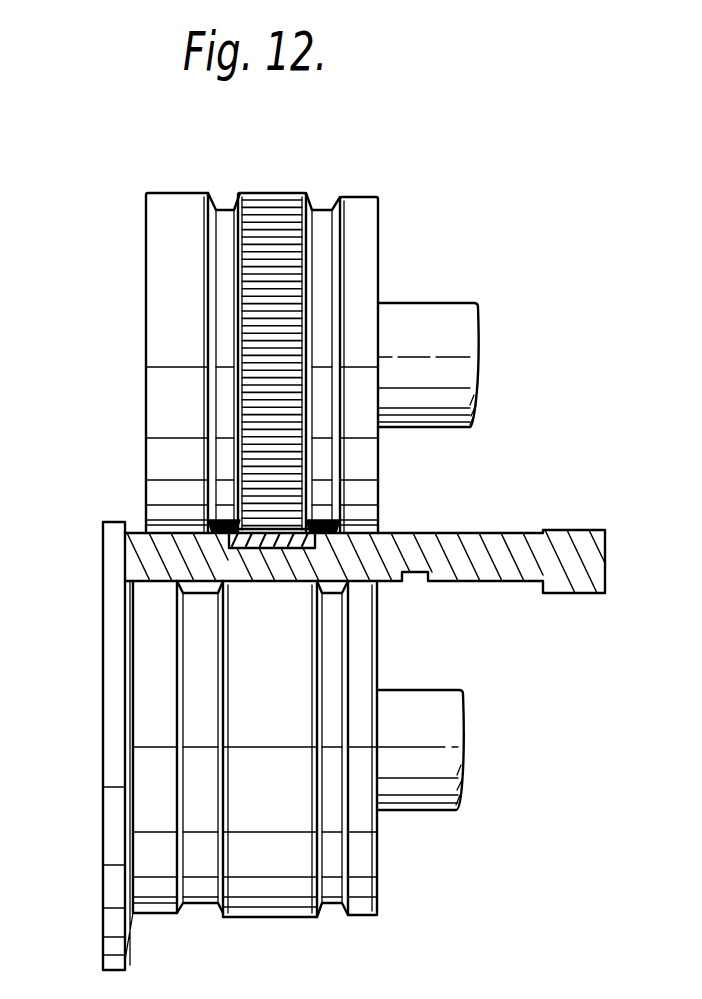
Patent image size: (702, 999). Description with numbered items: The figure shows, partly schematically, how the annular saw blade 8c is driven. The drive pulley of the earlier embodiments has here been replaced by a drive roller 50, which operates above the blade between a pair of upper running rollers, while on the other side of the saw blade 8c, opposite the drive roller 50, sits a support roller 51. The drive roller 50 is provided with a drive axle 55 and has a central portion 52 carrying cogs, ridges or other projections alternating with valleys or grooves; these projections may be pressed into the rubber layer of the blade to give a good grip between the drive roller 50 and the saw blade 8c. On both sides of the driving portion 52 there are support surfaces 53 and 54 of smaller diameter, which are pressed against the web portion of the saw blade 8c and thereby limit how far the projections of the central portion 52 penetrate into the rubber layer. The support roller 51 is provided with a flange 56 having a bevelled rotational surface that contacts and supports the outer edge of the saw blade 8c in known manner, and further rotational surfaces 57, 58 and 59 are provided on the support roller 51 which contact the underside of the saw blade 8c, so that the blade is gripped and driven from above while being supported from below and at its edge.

The saw blade 8c is at (453, 534).
The drive roller 50 is at (146, 253).
The support roller 51 is at (103, 676).
The central portion 52 is at (288, 193).
The support surface 53 is at (181, 193).
The support surface 54 is at (359, 197).
The drive axle 55 is at (458, 311).
The flange 56 is at (125, 829).
The rotational surface 57 is at (168, 917).
The rotational surface 58 is at (273, 918).
The rotational surface 59 is at (365, 915).